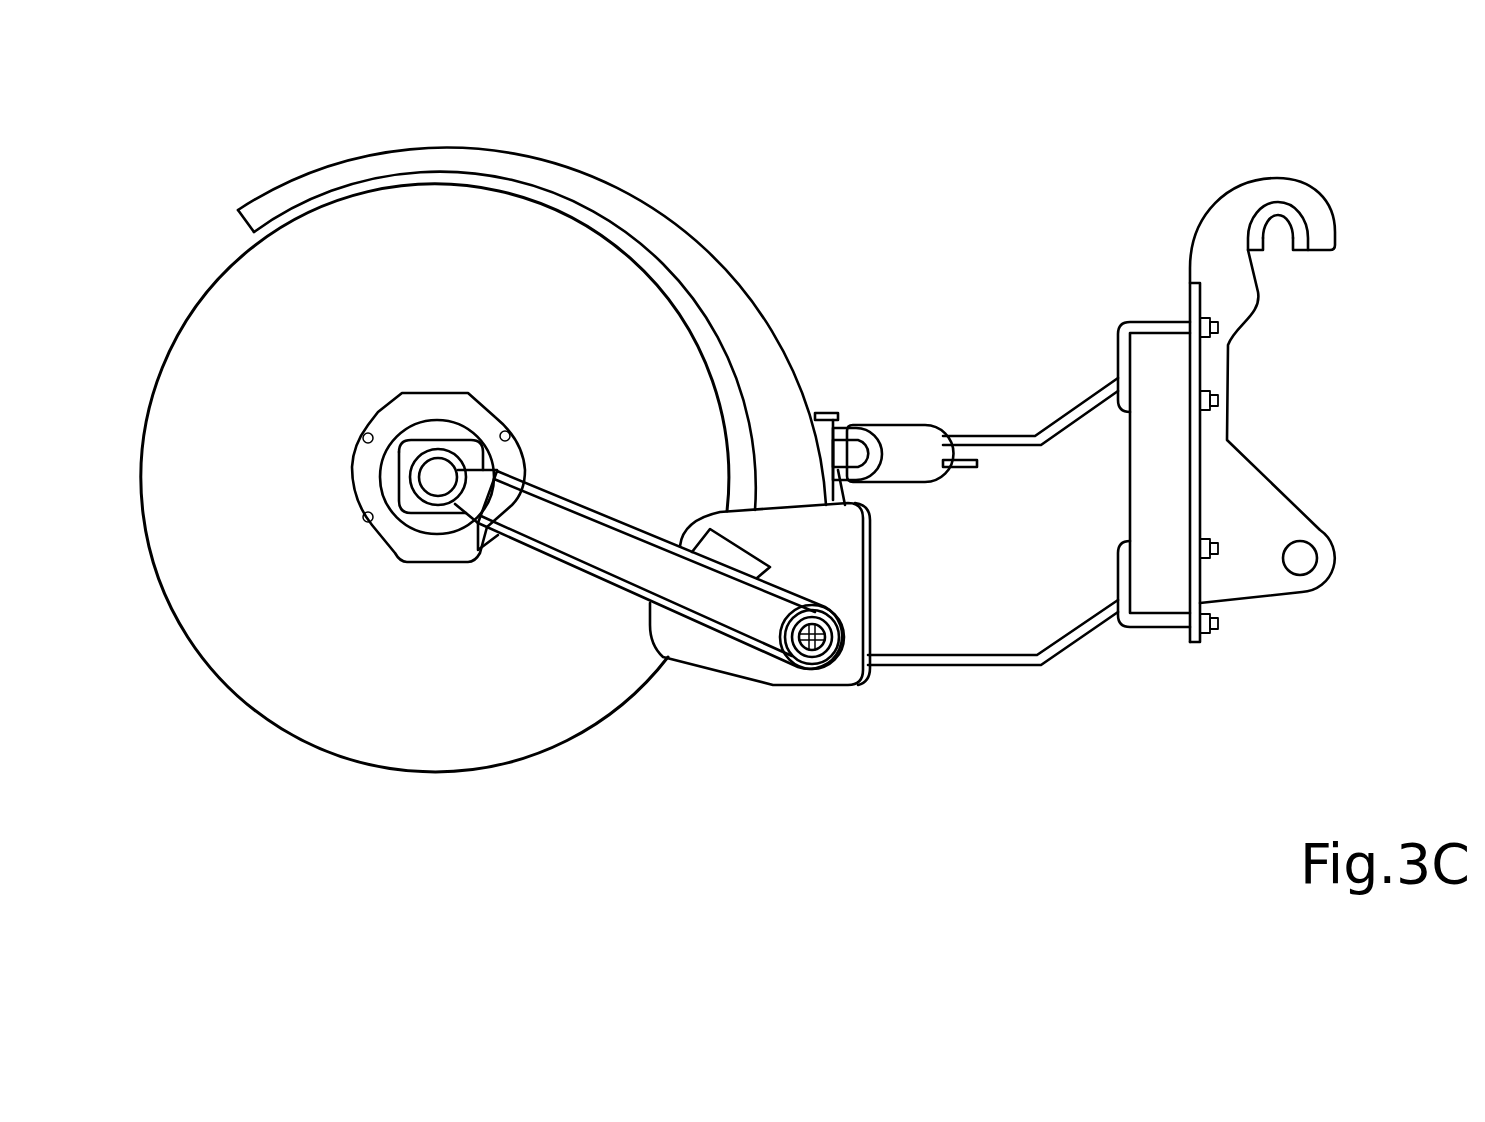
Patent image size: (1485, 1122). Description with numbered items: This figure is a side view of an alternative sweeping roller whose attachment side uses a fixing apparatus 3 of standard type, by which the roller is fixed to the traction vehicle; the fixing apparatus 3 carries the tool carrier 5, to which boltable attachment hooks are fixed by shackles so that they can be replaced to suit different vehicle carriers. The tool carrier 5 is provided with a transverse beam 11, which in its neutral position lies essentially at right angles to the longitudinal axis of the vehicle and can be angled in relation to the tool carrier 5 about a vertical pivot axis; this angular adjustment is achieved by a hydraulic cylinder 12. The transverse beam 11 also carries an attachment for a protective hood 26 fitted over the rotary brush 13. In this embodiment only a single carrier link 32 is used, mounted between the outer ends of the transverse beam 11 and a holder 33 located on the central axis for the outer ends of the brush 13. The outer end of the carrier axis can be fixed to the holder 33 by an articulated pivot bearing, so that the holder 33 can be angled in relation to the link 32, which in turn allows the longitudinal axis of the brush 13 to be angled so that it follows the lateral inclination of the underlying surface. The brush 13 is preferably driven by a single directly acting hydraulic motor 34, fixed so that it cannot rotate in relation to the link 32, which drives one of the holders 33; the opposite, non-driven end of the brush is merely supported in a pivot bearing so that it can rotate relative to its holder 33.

The fixing apparatus 3 is at (1268, 372).
The tool carrier 5 is at (1075, 433).
The transverse beam 11 is at (878, 690).
The hydraulic cylinder 12 is at (897, 433).
The brush 13 is at (385, 753).
The protective hood 26 is at (688, 248).
The carrier link 32 is at (600, 553).
The holder 33 is at (425, 552).
The hydraulic motor 34 is at (407, 453).